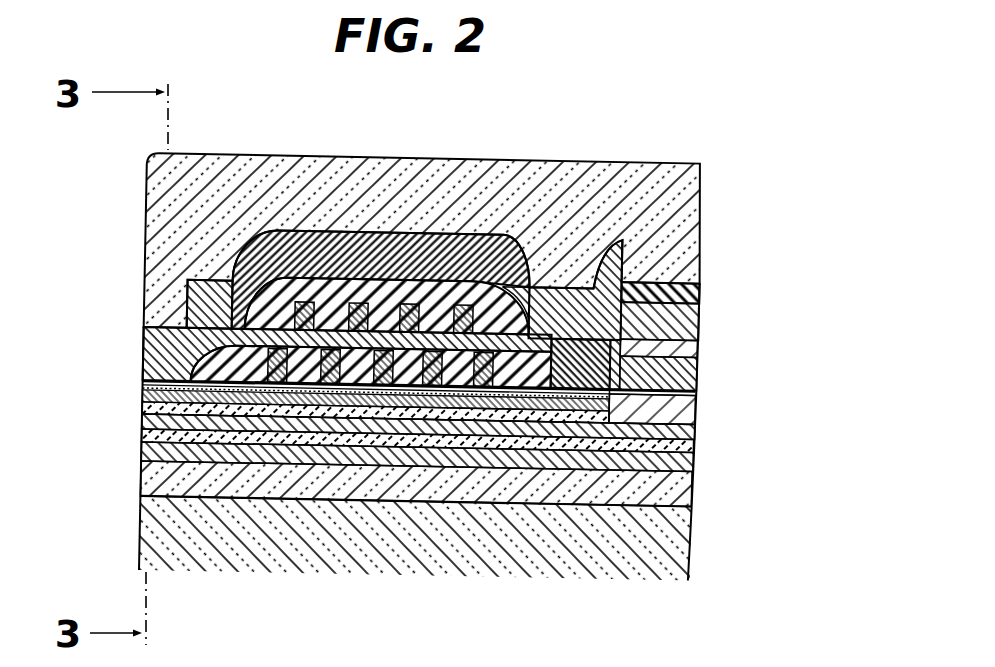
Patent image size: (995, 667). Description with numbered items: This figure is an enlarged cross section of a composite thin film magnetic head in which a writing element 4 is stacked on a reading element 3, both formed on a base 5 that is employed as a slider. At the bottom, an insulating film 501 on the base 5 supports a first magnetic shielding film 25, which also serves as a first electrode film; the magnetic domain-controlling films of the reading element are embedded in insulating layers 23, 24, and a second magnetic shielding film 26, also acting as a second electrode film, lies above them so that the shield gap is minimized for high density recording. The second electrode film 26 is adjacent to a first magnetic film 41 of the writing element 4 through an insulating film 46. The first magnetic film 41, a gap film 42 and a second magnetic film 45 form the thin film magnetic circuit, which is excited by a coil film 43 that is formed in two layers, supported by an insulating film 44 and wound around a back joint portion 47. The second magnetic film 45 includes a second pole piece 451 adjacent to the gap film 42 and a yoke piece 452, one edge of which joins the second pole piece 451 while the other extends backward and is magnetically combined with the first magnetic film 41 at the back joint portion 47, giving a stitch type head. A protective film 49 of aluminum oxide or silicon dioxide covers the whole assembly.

The protective film 49 is at (250, 197).
The second magnetic film 45 is at (404, 222).
The writing element 4 is at (170, 270).
The yoke piece 452 is at (190, 303).
The back joint portion 47 is at (573, 340).
The insulating film 46 is at (610, 414).
The second pole piece 451 is at (146, 350).
The insulating film 44 is at (426, 390).
The coil film 43 is at (382, 384).
The first magnetic film 41 is at (146, 389).
The gap film 42 is at (330, 402).
The second magnetic shielding film 26 is at (283, 427).
The reading element 3 is at (142, 438).
The insulating layer 23 is at (201, 444).
The insulating layer 24 is at (417, 540).
The first magnetic shielding film 25 is at (552, 457).
The insulating film 501 is at (486, 478).
The base 5 is at (660, 556).